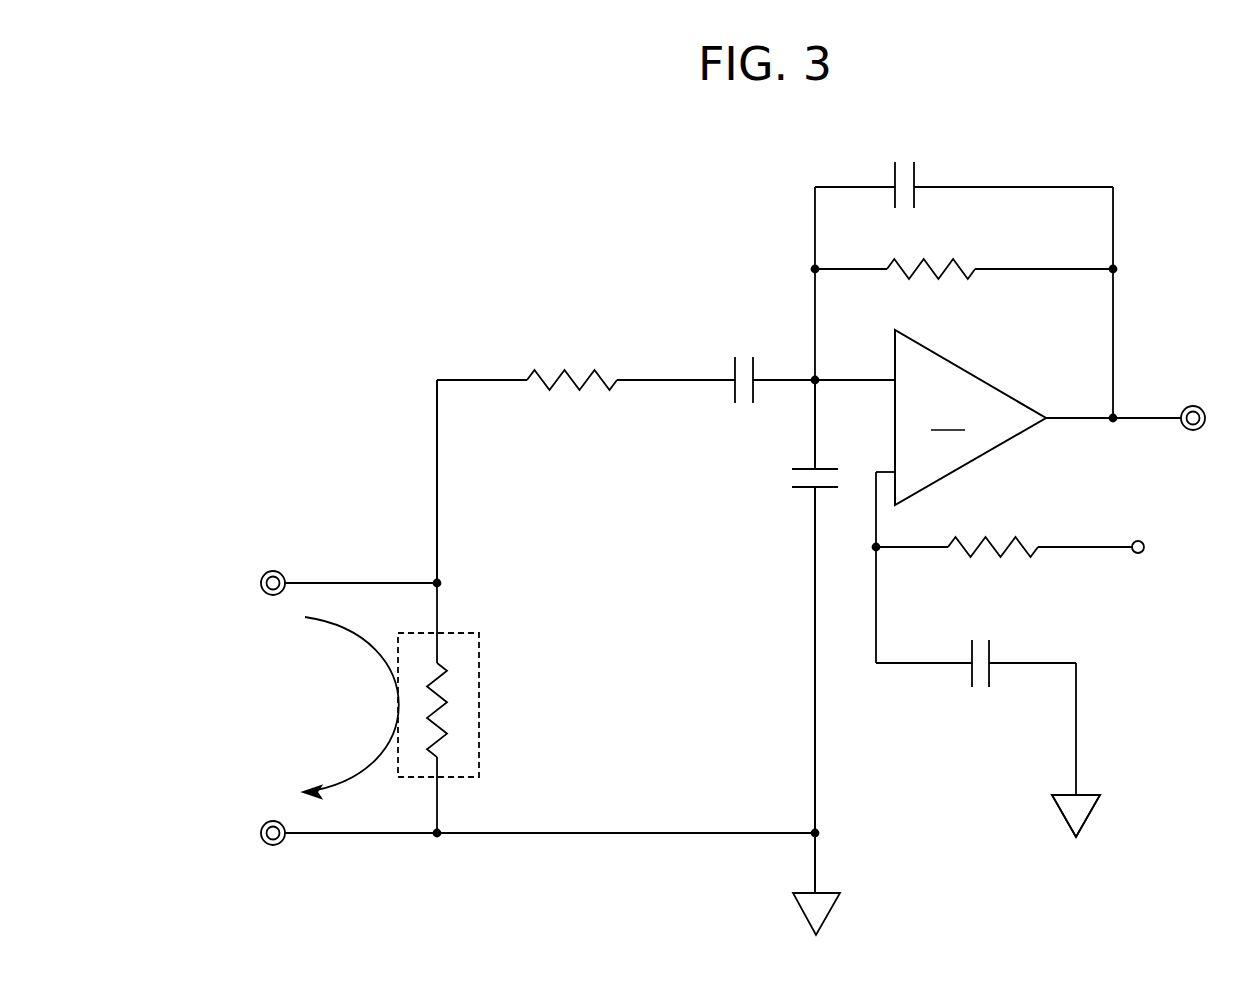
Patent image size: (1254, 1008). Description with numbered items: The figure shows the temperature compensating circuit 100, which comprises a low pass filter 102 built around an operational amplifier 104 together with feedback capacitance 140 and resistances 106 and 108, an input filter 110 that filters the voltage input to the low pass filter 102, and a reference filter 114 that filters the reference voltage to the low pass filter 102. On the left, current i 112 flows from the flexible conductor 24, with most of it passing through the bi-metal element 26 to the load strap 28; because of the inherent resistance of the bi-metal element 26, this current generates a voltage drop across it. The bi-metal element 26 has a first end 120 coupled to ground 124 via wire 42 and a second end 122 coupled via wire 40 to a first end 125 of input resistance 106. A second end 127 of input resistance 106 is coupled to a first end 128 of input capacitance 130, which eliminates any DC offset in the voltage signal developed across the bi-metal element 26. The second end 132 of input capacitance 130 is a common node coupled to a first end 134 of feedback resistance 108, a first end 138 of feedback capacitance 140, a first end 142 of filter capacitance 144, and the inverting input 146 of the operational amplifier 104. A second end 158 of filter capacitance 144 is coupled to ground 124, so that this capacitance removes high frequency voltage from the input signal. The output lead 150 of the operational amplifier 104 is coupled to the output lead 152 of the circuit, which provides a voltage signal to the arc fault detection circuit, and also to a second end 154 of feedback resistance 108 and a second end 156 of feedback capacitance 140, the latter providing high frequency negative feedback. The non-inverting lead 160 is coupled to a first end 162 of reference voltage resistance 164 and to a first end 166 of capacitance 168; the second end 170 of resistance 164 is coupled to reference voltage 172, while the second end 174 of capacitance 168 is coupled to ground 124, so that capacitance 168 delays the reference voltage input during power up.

The temperature compensating circuit 100 is at (553, 258).
The low pass filter 102 is at (752, 262).
The operational amplifier 104 is at (970, 417).
The input resistance 106 is at (595, 375).
The feedback resistance 108 is at (955, 265).
The input filter 110 is at (735, 655).
The current i 112 is at (373, 658).
The reference filter 114 is at (990, 763).
The first end of bi-metal element 120 is at (441, 833).
The second end of bi-metal element 122 is at (441, 583).
The ground 124 is at (828, 918).
The first end of input resistance 125 is at (485, 380).
The second end of input resistance 127 is at (675, 385).
The first end of input capacitance 128 is at (697, 380).
The input capacitance 130 is at (742, 357).
The second end of input capacitance 132 is at (787, 380).
The first end of feedback resistance 134 is at (858, 269).
The first end of feedback capacitance 138 is at (853, 187).
The feedback capacitance 140 is at (900, 162).
The first end of filter capacitance 142 is at (810, 432).
The filter capacitance 144 is at (792, 480).
The inverting input 146 is at (853, 380).
The output lead of OP-AMP 150 is at (1080, 418).
The output lead of circuit 152 is at (1193, 406).
The second end of feedback resistance 154 is at (1058, 269).
The second end of feedback capacitance 156 is at (940, 187).
The second end of filter capacitance 158 is at (816, 555).
The non-inverting lead 160 is at (882, 470).
The first end of reference voltage resistance 162 is at (903, 547).
The reference voltage resistance 164 is at (1015, 545).
The first end of capacitance C4 166 is at (937, 663).
The capacitance 168 is at (982, 687).
The second end of reference voltage resistance 170 is at (1072, 547).
The reference voltage 172 is at (1142, 540).
The second end of capacitance C4 174 is at (1035, 663).
The flexible conductor 24 is at (360, 583).
The bi-metal element 26 is at (480, 655).
The load strap 28 is at (370, 840).
The wire 40 is at (437, 478).
The wire 42 is at (608, 833).